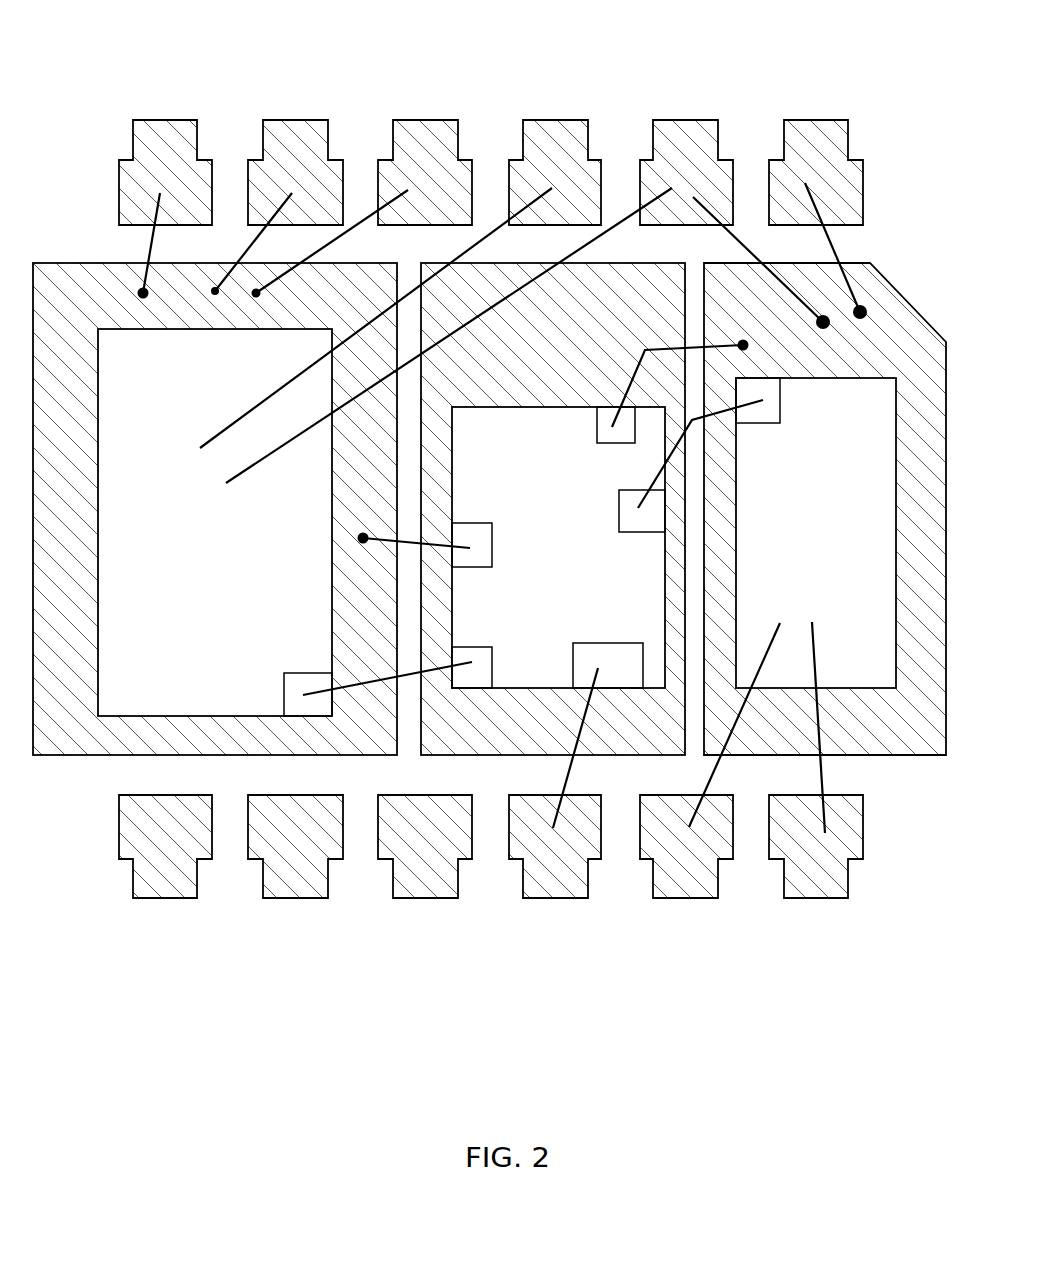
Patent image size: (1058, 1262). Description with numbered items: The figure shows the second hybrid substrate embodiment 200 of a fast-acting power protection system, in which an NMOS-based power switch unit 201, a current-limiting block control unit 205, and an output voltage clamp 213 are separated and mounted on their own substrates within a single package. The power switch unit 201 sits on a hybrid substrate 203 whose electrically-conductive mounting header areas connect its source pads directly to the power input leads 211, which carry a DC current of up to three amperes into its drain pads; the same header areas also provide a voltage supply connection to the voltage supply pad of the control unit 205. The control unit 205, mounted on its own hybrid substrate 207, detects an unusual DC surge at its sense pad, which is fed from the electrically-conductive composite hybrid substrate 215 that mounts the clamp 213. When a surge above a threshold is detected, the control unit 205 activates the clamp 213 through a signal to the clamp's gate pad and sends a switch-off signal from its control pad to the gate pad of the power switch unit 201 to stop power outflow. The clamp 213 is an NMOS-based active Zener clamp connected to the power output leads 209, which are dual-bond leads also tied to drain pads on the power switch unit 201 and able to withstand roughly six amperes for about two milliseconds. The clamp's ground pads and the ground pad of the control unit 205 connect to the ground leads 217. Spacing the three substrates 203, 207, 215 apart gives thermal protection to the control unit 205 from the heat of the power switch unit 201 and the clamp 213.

The second hybrid substrate embodiment 200 is at (517, 1089).
The NMOS-based power switch unit 201 is at (215, 522).
The hybrid substrate of the NMOS-based power switch unit 203 is at (215, 509).
The current-limiting block control unit 205 is at (558, 547).
The hybrid substrate of the current-limiting block control unit 207 is at (553, 509).
The power output leads 209 is at (832, 105).
The power input leads 211 is at (425, 105).
The output voltage clamp 213 is at (816, 533).
The electrically-conductive composite hybrid substrate of the output voltage clamp 215 is at (825, 509).
The ground leads 217 is at (820, 920).